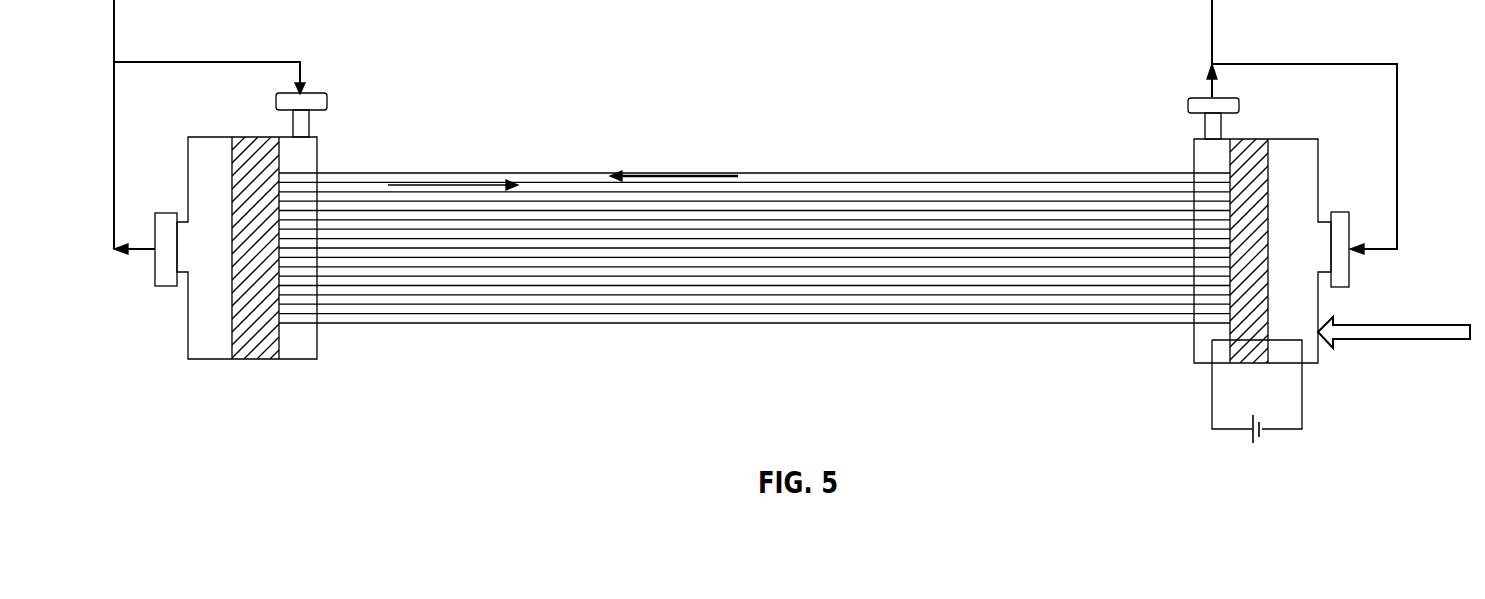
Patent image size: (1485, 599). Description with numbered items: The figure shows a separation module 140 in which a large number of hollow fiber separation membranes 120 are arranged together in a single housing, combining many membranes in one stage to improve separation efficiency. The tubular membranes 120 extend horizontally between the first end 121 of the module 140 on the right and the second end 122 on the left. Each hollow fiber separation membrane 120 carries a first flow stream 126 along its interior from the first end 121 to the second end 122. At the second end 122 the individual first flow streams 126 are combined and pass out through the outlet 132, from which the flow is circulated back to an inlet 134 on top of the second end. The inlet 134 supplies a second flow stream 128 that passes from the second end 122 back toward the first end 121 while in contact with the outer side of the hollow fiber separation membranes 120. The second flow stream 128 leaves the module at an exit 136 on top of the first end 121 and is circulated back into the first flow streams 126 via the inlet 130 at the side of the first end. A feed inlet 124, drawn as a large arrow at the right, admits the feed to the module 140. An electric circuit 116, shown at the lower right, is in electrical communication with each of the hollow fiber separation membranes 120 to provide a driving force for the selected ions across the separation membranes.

The separation module 140 is at (485, 126).
The inlet 134 is at (302, 90).
The exit 136 is at (1207, 97).
The second end 122 is at (226, 360).
The first end 121 is at (1196, 363).
The outlet 132 is at (155, 252).
The inlet 130 is at (1352, 255).
The electric circuit 116 is at (1278, 431).
The feed inlet 124 is at (1394, 345).
The hollow fiber separation membranes 120 is at (836, 223).
The second flow stream 128 is at (447, 185).
The first flow stream 126 is at (661, 176).